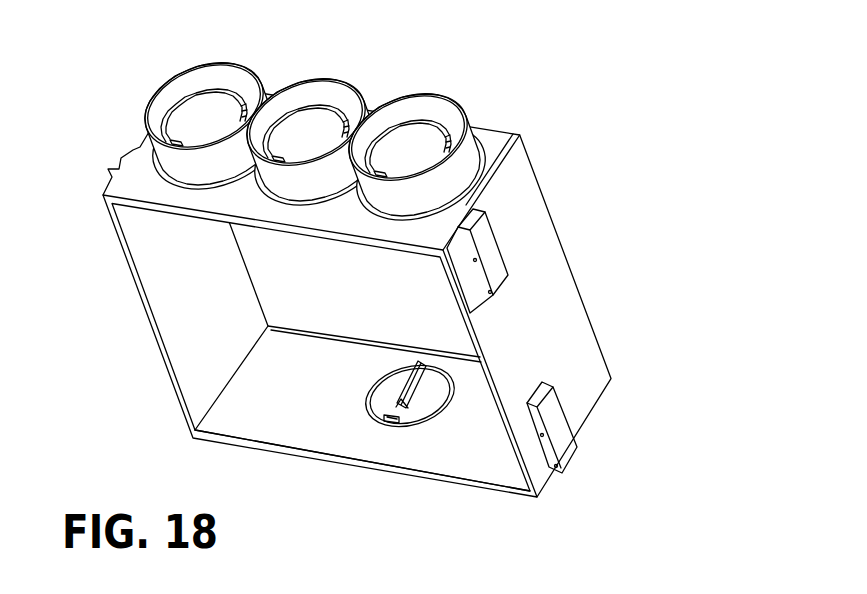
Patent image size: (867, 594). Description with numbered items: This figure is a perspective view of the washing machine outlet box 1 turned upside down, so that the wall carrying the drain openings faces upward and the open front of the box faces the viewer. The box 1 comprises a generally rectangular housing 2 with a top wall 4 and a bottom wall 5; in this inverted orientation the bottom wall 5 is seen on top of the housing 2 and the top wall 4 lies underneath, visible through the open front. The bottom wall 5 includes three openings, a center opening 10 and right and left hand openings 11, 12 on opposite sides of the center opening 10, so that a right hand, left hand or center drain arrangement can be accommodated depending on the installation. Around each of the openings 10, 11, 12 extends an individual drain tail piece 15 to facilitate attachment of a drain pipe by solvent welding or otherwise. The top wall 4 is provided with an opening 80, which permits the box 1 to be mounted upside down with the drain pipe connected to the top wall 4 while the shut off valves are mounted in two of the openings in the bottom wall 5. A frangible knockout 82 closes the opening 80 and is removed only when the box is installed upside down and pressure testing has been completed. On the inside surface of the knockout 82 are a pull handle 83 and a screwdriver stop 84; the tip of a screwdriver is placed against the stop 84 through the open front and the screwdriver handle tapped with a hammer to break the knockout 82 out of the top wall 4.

The box 1 is at (120, 278).
The housing 2 is at (547, 200).
The top wall 4 is at (293, 432).
The bottom wall 5 is at (148, 168).
The center opening 10 is at (313, 140).
The right hand opening 11 is at (415, 160).
The left hand opening 12 is at (215, 125).
The drain tail piece 15 is at (223, 68).
The opening 80 is at (367, 397).
The frangible knockout 82 is at (432, 400).
The pull handle 83 is at (397, 373).
The screwdriver stop 84 is at (392, 427).